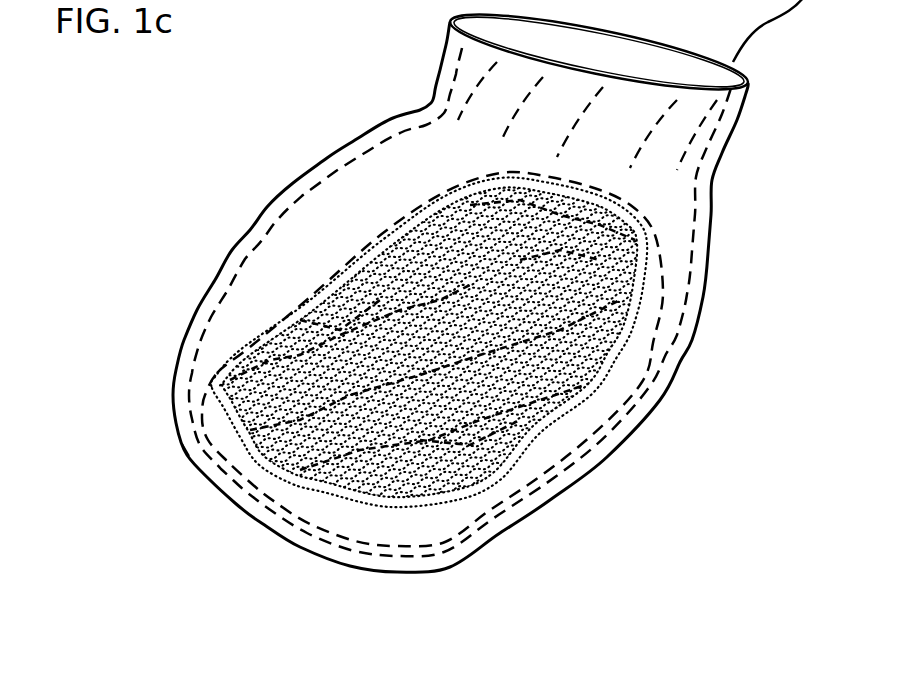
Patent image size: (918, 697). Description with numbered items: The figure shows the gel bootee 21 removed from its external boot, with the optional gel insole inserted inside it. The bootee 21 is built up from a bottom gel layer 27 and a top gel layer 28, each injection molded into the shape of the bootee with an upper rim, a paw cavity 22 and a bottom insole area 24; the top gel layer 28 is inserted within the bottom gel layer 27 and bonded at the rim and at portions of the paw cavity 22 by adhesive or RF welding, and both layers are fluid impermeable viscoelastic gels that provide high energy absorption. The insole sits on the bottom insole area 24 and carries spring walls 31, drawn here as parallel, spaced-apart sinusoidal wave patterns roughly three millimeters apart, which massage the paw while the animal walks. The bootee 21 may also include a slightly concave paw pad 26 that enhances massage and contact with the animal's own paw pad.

The gel bootee 21 is at (695, 348).
The paw cavity 22 is at (297, 247).
The bottom insole area 24 is at (547, 508).
The paw pad 26 is at (425, 574).
The bottom gel layer 27 is at (205, 478).
The top gel layer 28 is at (305, 550).
The spring walls 31 is at (185, 450).